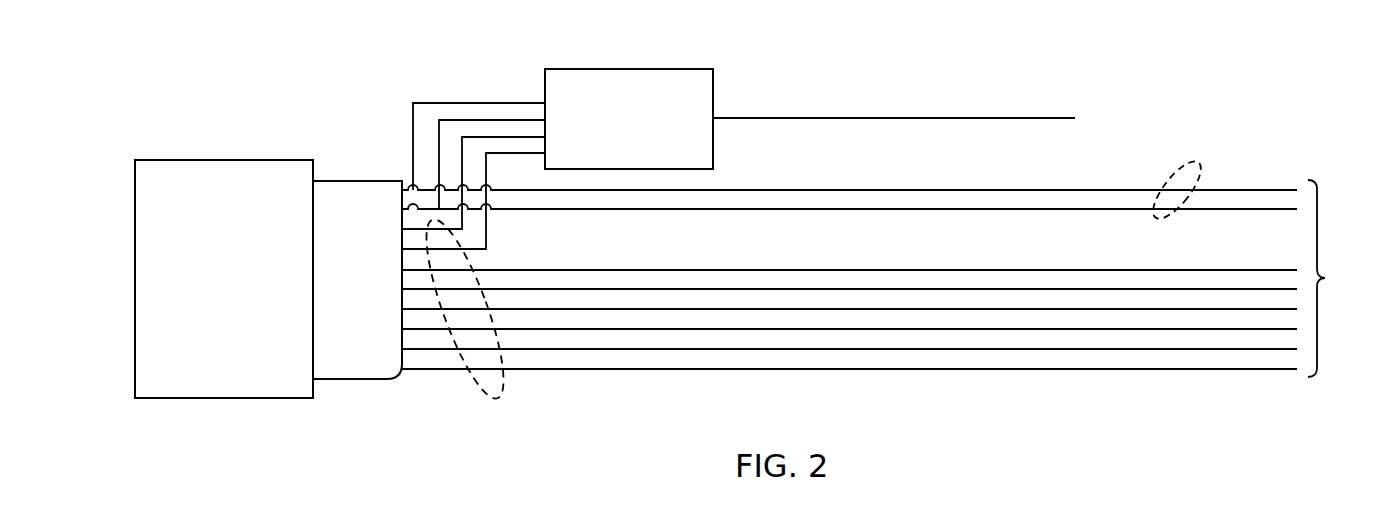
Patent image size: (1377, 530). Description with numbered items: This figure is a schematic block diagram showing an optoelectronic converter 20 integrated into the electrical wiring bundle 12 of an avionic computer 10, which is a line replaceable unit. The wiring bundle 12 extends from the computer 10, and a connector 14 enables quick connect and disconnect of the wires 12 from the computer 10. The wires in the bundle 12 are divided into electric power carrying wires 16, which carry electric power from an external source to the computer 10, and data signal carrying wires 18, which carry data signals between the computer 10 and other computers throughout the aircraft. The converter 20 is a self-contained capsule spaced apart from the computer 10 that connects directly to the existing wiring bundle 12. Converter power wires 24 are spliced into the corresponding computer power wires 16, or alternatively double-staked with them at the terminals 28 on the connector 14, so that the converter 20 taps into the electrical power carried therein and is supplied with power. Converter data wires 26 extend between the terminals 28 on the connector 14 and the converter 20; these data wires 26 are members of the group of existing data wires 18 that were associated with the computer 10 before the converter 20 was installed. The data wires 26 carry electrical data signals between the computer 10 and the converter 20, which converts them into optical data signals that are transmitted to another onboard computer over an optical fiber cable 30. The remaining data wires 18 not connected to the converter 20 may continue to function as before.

The avionic computer 10 is at (295, 383).
The electrical wiring bundle 12 is at (881, 278).
The connector 14 is at (390, 363).
The electric power carrying wires 16 is at (1185, 163).
The data signal carrying wires 18 is at (497, 402).
The optoelectronic converter 20 is at (700, 69).
The converter power wires 24 is at (448, 120).
The converter data wires 26 is at (510, 153).
The terminals 28 is at (398, 206).
The optical fiber cable 30 is at (788, 118).